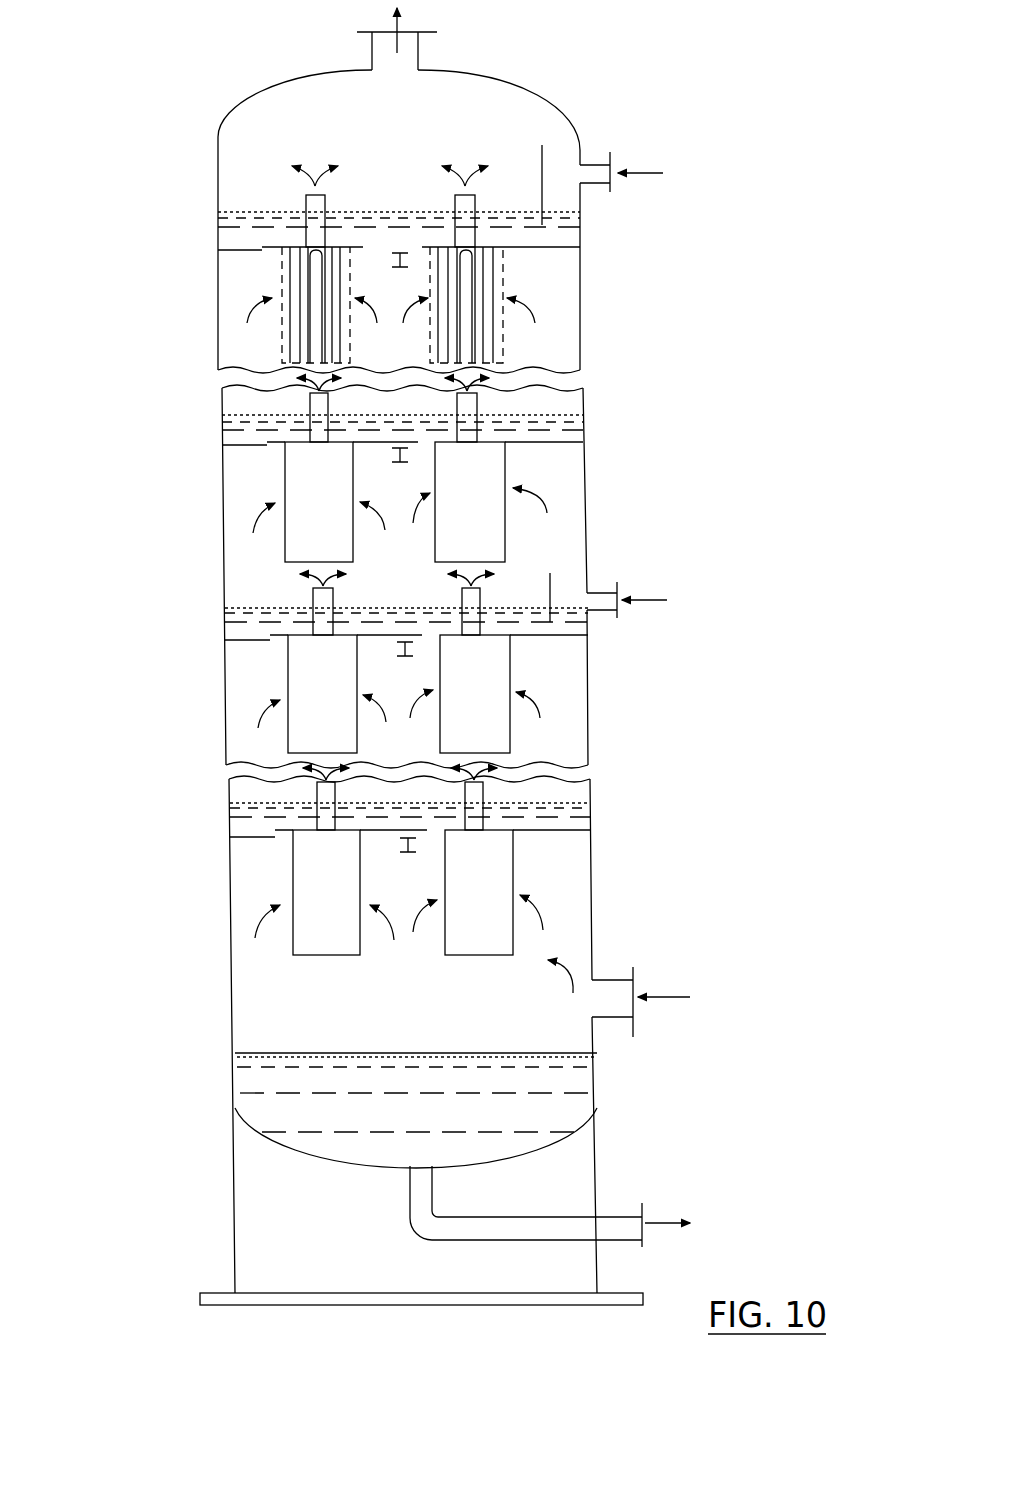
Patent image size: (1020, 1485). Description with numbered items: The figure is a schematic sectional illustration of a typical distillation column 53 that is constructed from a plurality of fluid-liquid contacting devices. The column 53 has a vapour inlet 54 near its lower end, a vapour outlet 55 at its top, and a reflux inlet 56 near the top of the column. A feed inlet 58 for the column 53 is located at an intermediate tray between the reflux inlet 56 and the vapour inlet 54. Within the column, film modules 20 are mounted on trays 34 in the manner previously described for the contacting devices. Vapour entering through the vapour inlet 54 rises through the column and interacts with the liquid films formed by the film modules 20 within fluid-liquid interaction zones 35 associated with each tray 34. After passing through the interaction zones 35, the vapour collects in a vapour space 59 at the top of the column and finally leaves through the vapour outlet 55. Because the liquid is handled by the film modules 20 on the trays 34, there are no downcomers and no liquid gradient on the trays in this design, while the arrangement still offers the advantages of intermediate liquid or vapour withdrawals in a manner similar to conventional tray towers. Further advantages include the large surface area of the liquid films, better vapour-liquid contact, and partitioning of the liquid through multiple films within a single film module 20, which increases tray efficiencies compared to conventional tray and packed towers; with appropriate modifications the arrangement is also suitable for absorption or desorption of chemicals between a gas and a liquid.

The distillation column 53 is at (165, 722).
The vapour outlet 55 is at (372, 50).
The vapour space 59 is at (322, 129).
The reflux inlet 56 is at (598, 163).
The tray 34 is at (553, 247).
The fluid-liquid interaction zone 35 is at (229, 286).
The film module 20 is at (493, 288).
The feed inlet 58 is at (600, 593).
The vapour inlet 54 is at (613, 980).